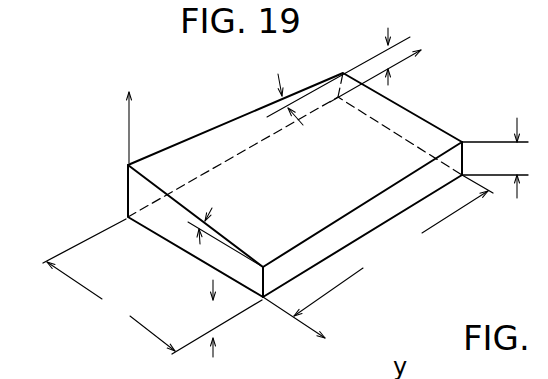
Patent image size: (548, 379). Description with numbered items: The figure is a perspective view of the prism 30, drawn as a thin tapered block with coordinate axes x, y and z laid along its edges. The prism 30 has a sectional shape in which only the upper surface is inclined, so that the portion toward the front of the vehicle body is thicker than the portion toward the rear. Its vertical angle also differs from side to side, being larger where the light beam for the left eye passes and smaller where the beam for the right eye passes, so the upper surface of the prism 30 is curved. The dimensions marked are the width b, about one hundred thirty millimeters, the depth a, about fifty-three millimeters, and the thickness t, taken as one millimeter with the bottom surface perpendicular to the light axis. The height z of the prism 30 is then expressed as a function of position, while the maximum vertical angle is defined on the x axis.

The prism 30 is at (238, 141).
The depth a is at (152, 286).
The width b is at (393, 245).
The thickness t is at (368, 192).
The x-axis x is at (304, 325).
The y-axis y is at (385, 67).
The height z is at (128, 113).